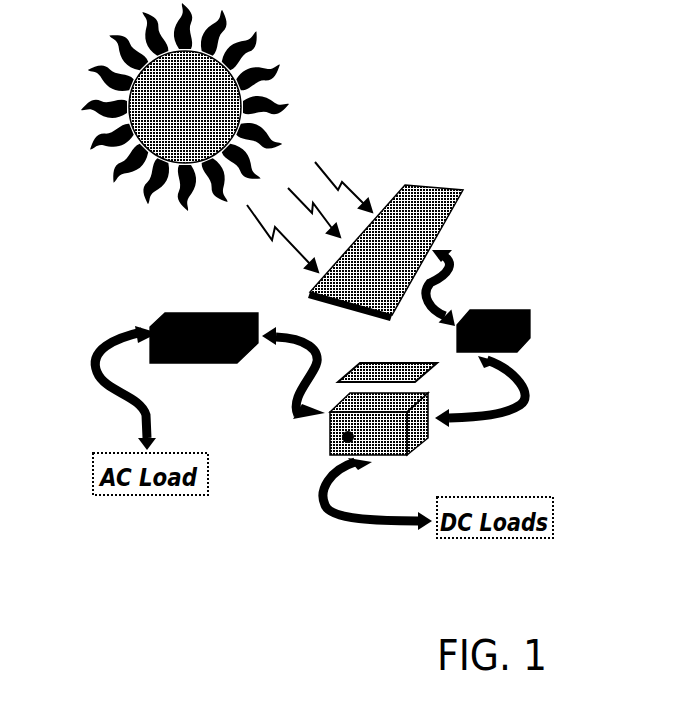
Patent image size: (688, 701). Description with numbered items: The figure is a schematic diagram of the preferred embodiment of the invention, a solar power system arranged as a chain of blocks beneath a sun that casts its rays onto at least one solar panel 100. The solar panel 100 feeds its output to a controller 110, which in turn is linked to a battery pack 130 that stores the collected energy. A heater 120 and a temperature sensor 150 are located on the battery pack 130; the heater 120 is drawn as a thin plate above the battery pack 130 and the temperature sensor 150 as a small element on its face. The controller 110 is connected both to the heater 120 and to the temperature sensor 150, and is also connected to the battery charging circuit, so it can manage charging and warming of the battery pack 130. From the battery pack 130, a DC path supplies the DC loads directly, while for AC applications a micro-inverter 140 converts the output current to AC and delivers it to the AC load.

The solar panel 100 is at (463, 192).
The controller 110 is at (530, 310).
The heater 120 is at (381, 368).
The battery pack 130 is at (415, 433).
The micro-inverter 140 is at (203, 312).
The temperature sensor 150 is at (330, 447).